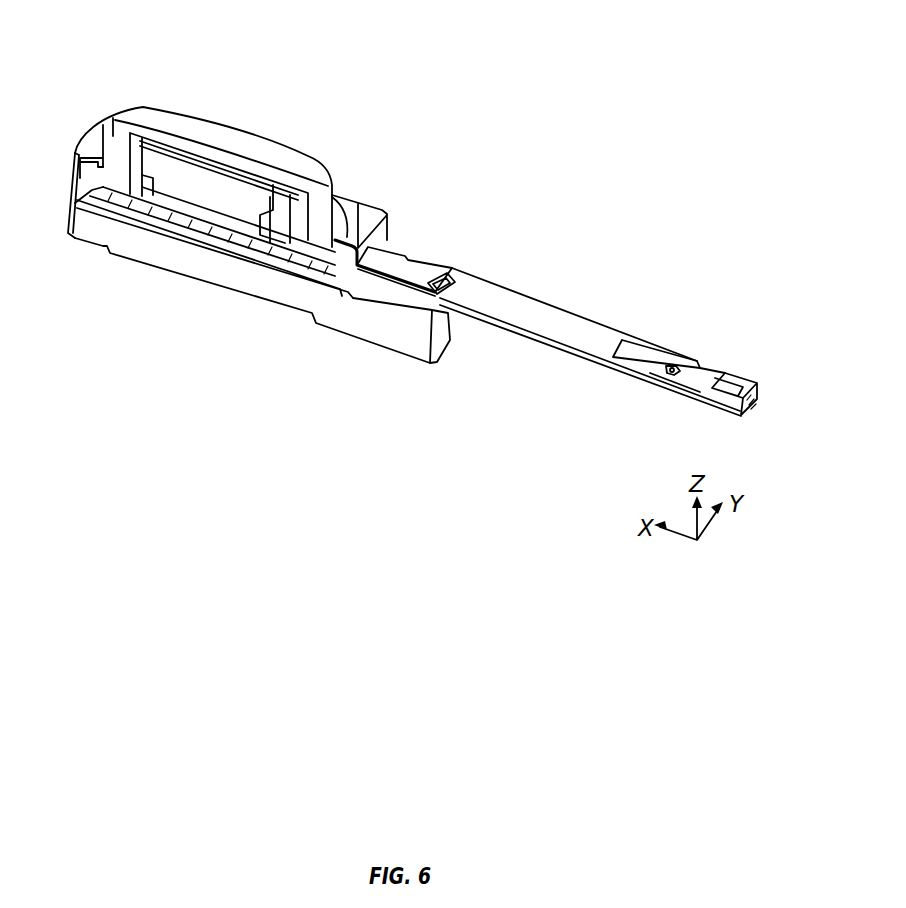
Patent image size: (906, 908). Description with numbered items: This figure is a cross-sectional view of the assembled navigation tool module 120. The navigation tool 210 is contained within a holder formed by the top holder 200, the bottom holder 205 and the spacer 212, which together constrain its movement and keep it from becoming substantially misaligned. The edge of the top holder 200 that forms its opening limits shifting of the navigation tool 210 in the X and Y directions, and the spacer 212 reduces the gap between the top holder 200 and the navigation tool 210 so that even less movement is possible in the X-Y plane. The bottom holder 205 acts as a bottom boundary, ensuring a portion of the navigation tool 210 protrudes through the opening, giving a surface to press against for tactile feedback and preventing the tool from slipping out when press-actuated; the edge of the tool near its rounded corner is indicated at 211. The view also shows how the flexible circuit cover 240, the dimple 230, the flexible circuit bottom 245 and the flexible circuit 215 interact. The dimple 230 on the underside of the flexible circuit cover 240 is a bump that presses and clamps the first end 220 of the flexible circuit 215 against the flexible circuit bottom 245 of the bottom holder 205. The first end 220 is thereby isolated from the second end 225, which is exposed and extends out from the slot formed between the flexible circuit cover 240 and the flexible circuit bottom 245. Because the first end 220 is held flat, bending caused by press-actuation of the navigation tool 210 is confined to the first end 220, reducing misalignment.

The navigation tool module 120 is at (188, 44).
The top holder 200 is at (358, 217).
The bottom holder 205 is at (207, 266).
The navigation tool 210 is at (238, 127).
The cover corner edge 211 is at (115, 124).
The spacer 212 is at (100, 146).
The flexible circuit 215 is at (541, 306).
The first end 220 is at (383, 290).
The second end 225 is at (758, 383).
The dimple 230 is at (453, 272).
The flexible circuit cover 240 is at (407, 270).
The flexible circuit bottom 245 is at (405, 337).